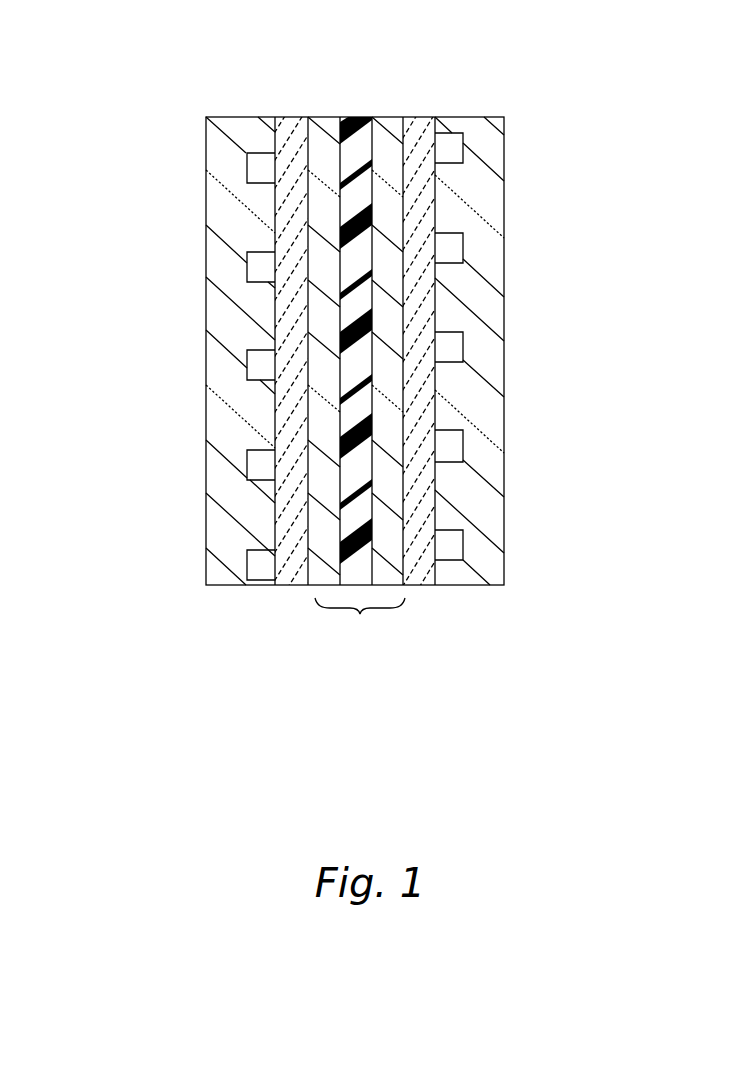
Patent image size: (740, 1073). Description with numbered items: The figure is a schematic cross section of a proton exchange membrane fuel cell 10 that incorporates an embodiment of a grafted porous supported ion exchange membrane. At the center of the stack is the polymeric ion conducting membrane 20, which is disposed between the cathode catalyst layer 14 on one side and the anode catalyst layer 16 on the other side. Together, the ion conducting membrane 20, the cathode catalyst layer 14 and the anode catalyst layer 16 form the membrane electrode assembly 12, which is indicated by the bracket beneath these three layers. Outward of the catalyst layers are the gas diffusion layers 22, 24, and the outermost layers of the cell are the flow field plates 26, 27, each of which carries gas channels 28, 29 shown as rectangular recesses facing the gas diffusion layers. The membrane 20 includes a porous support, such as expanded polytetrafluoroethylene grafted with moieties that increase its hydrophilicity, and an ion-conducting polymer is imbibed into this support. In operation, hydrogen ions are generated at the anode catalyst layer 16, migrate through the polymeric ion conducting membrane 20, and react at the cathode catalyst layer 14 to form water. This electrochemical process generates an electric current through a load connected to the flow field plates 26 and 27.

The proton exchange membrane fuel cell 10 is at (140, 121).
The membrane electrode assembly 12 is at (360, 624).
The cathode catalyst layer 14 is at (328, 115).
The anode catalyst layer 16 is at (382, 114).
The polymeric ion conducting membrane 20 is at (358, 114).
The gas diffusion layer 22 is at (297, 114).
The gas diffusion layer 24 is at (418, 114).
The flow field plate 26 is at (238, 117).
The flow field plate 27 is at (463, 115).
The gas channel 28 is at (259, 269).
The gas channel 29 is at (452, 244).